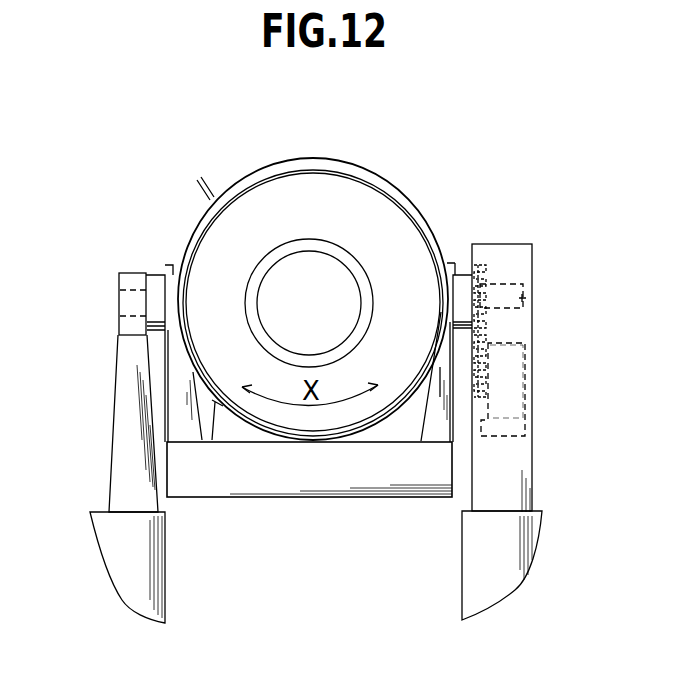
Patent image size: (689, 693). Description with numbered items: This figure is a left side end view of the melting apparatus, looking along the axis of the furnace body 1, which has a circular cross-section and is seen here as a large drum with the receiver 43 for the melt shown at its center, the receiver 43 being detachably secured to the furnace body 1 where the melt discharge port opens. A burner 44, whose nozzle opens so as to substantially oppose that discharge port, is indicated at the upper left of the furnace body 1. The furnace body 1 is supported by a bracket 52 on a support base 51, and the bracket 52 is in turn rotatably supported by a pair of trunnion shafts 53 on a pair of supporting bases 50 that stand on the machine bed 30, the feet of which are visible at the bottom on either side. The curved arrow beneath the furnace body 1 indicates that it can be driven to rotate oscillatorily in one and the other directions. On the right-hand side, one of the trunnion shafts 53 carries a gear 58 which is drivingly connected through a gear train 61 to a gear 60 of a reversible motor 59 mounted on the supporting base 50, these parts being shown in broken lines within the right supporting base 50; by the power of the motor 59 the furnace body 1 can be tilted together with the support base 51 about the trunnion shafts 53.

The furnace body 1 is at (373, 176).
The machine bed 30 is at (143, 597).
The receiver 43 is at (317, 302).
The burner 44 is at (206, 190).
The supporting base 50 is at (138, 420).
The support base 51 is at (299, 477).
The bracket 52 is at (180, 362).
The trunnion shaft 53 is at (130, 300).
The gear 58 is at (490, 320).
The reversible motor 59 is at (488, 415).
The gear 60 is at (488, 387).
The gear train 61 is at (487, 346).